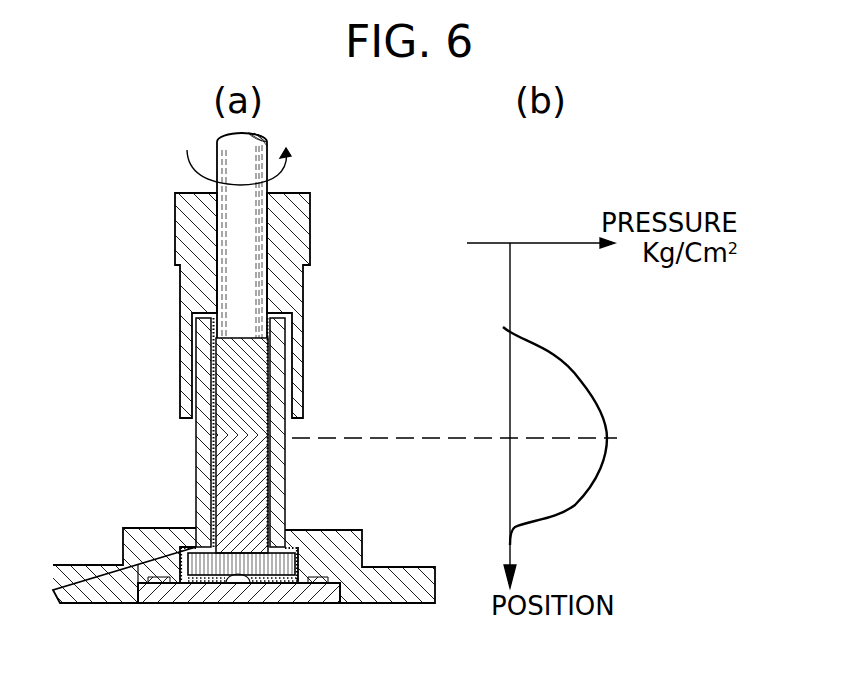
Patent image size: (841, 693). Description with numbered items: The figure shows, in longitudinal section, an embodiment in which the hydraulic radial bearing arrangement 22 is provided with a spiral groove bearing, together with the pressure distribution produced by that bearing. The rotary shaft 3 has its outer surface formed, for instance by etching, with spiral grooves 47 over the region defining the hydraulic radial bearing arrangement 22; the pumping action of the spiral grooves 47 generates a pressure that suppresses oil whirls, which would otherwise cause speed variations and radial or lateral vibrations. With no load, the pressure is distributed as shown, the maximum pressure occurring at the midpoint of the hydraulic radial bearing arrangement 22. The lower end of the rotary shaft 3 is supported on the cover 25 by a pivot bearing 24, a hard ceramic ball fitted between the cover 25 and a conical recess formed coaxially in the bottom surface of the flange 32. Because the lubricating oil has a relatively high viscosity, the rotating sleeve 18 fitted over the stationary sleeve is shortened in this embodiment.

The rotary shaft 3 is at (258, 228).
The rotating sleeve 18 is at (287, 283).
The hydraulic radial bearing arrangement 22 is at (215, 434).
The spiral grooves 47 is at (212, 483).
The flange 32 is at (288, 548).
The pivot bearing 24 is at (238, 580).
The cover 25 is at (168, 595).